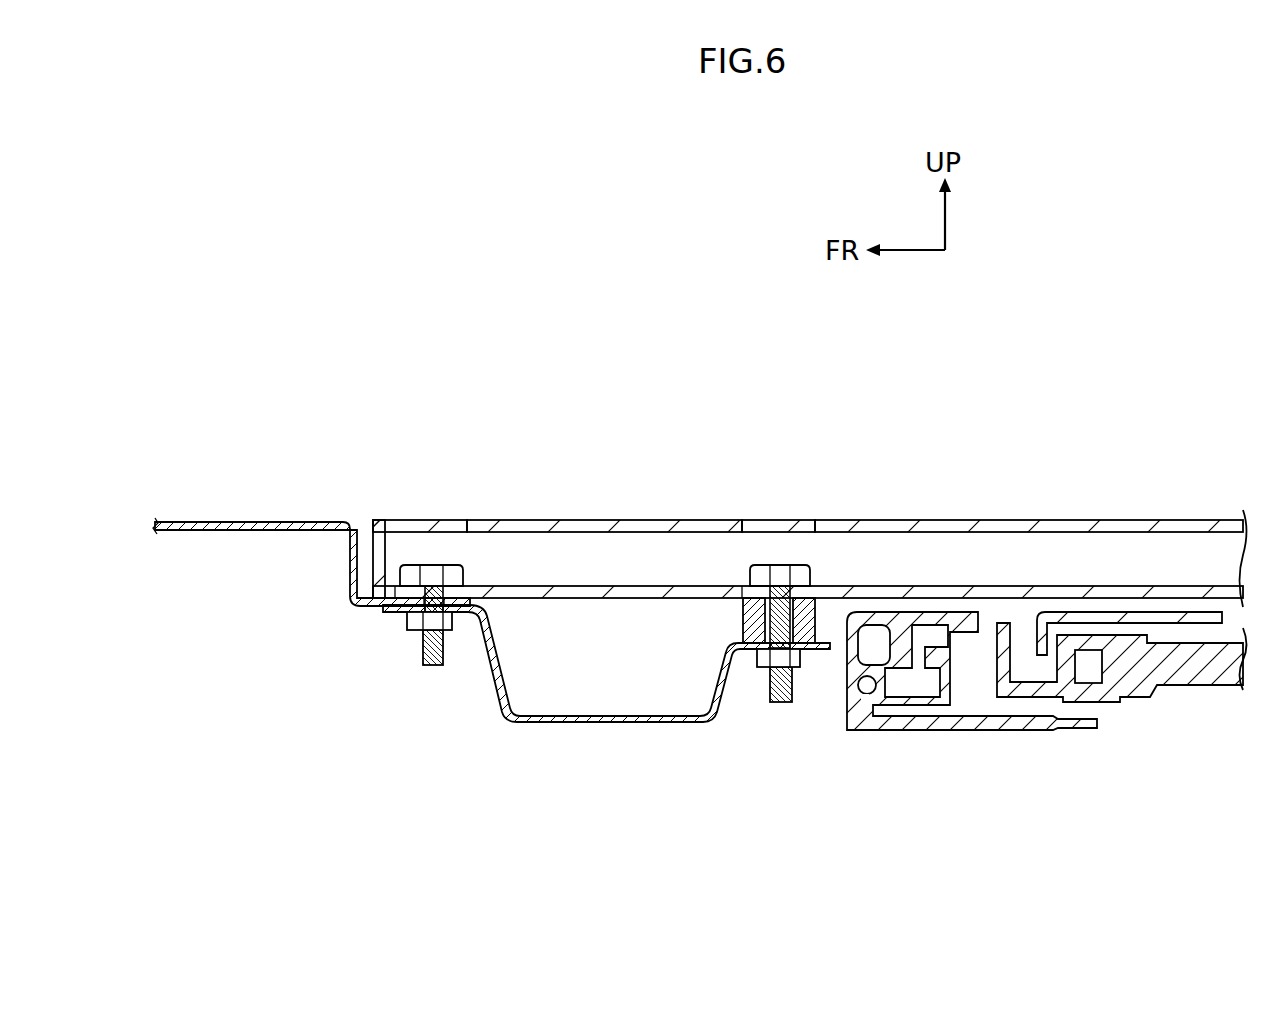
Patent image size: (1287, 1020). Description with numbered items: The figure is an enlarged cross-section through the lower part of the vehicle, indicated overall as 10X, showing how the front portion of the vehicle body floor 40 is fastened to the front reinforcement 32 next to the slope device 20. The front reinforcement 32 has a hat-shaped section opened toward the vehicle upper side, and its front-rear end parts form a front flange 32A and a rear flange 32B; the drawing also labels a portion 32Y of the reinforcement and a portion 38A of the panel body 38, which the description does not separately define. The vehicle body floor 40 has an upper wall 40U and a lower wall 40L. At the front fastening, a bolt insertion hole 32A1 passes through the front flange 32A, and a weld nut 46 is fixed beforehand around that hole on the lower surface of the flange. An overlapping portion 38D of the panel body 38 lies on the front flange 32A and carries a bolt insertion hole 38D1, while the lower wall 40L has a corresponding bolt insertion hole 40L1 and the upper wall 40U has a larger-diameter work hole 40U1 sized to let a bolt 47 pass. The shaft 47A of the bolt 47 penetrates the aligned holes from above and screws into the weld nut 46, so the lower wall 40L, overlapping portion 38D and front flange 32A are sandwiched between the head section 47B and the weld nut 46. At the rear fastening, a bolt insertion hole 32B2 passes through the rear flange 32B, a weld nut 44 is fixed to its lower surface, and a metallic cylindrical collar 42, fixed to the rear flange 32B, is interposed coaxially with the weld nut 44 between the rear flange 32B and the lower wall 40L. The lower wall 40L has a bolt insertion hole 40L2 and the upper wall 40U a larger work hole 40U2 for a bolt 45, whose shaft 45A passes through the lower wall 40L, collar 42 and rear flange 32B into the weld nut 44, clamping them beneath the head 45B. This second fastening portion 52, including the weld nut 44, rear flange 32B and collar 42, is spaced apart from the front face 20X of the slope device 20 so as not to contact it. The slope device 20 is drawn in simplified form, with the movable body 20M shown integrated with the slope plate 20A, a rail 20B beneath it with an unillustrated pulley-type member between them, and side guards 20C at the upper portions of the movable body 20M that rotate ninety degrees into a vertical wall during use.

The battery mounting structure 10X is at (666, 327).
The slope device 20 is at (1000, 752).
The slope plate 20A is at (1228, 684).
The rail 20B is at (975, 634).
The side guard 20C is at (1130, 612).
The movable body 20M is at (1139, 710).
The front face 20X is at (833, 598).
The front reinforcement 32 is at (483, 713).
The front flange 32A is at (465, 613).
The bolt insertion hole 32A1 is at (425, 612).
The rear flange 32B is at (748, 651).
The bolt insertion hole 32B2 is at (770, 666).
The tray rear wall 32Y is at (745, 633).
The panel body 38 is at (309, 500).
The floor panel upper portion 38A is at (245, 521).
The overlapping portion 38D is at (395, 596).
The bolt insertion hole 38D1 is at (428, 600).
The vehicle body floor 40 is at (937, 512).
The upper wall 40U is at (560, 520).
The work hole 40U1 is at (455, 521).
The work hole 40U2 is at (805, 526).
The lower wall 40L is at (583, 585).
The bolt insertion hole 40L1 is at (410, 597).
The bolt insertion hole 40L2 is at (765, 590).
The collar 42 is at (745, 600).
The weld nut 44 is at (794, 678).
The bolt 45 is at (830, 567).
The shaft 45A is at (796, 669).
The head 45B is at (775, 575).
The weld nut 46 is at (450, 621).
The bolt 47 is at (478, 566).
The shaft 47A is at (420, 646).
The head section 47B is at (480, 566).
The second fastening portion 52 is at (822, 660).